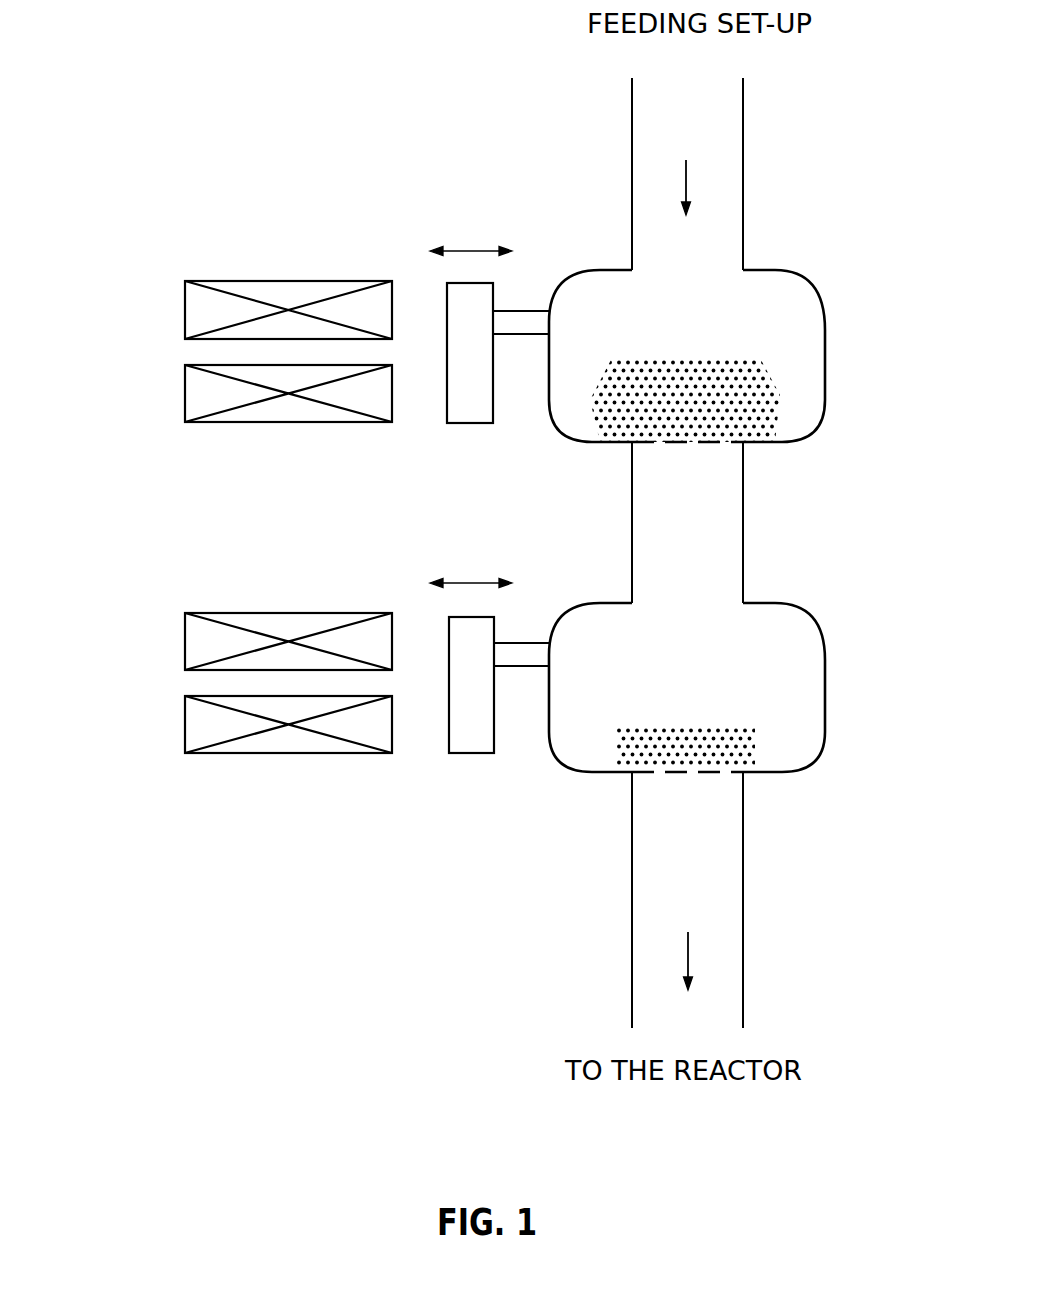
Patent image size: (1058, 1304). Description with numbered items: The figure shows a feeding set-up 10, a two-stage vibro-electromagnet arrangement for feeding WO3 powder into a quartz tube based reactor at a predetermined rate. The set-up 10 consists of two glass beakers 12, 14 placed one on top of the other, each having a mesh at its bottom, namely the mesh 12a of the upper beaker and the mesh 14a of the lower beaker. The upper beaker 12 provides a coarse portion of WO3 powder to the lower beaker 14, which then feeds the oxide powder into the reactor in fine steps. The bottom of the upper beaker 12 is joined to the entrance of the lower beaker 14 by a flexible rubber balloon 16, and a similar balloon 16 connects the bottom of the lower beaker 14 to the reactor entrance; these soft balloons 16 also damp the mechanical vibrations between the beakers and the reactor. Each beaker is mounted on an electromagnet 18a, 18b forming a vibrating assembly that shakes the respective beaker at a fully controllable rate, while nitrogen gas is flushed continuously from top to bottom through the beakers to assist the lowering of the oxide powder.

The feeding set-up 10 is at (802, 261).
The upper glass beaker 12 is at (572, 276).
The mesh 12a is at (665, 447).
The lower glass beaker 14 is at (572, 610).
The mesh 14a is at (665, 777).
The flexible rubber balloon 16 is at (748, 169).
The electromagnet 18a is at (168, 354).
The electromagnet 18b is at (172, 686).